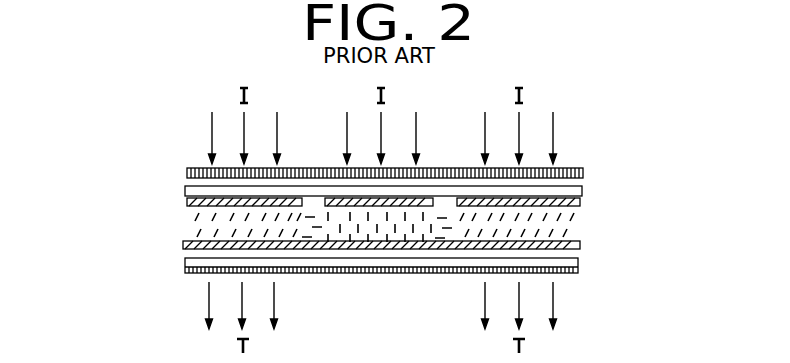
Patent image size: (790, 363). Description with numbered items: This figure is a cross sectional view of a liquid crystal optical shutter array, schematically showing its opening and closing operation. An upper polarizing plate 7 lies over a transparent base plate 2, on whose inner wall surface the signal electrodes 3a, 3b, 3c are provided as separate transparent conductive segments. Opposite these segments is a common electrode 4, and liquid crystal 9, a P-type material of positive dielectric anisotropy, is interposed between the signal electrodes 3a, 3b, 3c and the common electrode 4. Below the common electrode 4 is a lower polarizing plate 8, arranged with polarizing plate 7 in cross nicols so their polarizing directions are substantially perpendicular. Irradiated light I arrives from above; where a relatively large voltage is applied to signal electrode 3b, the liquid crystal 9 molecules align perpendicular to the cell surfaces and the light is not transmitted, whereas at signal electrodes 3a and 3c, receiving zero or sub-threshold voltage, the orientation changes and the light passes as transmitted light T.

The polarizing plate 7 is at (583, 174).
The base plate 2 is at (185, 191).
The signal electrode 3a is at (190, 203).
The signal electrode 3b is at (421, 203).
The signal electrode 3c is at (583, 203).
The liquid crystal 9 is at (575, 228).
The common electrode 4 is at (583, 247).
The polarizing plate 8 is at (580, 273).